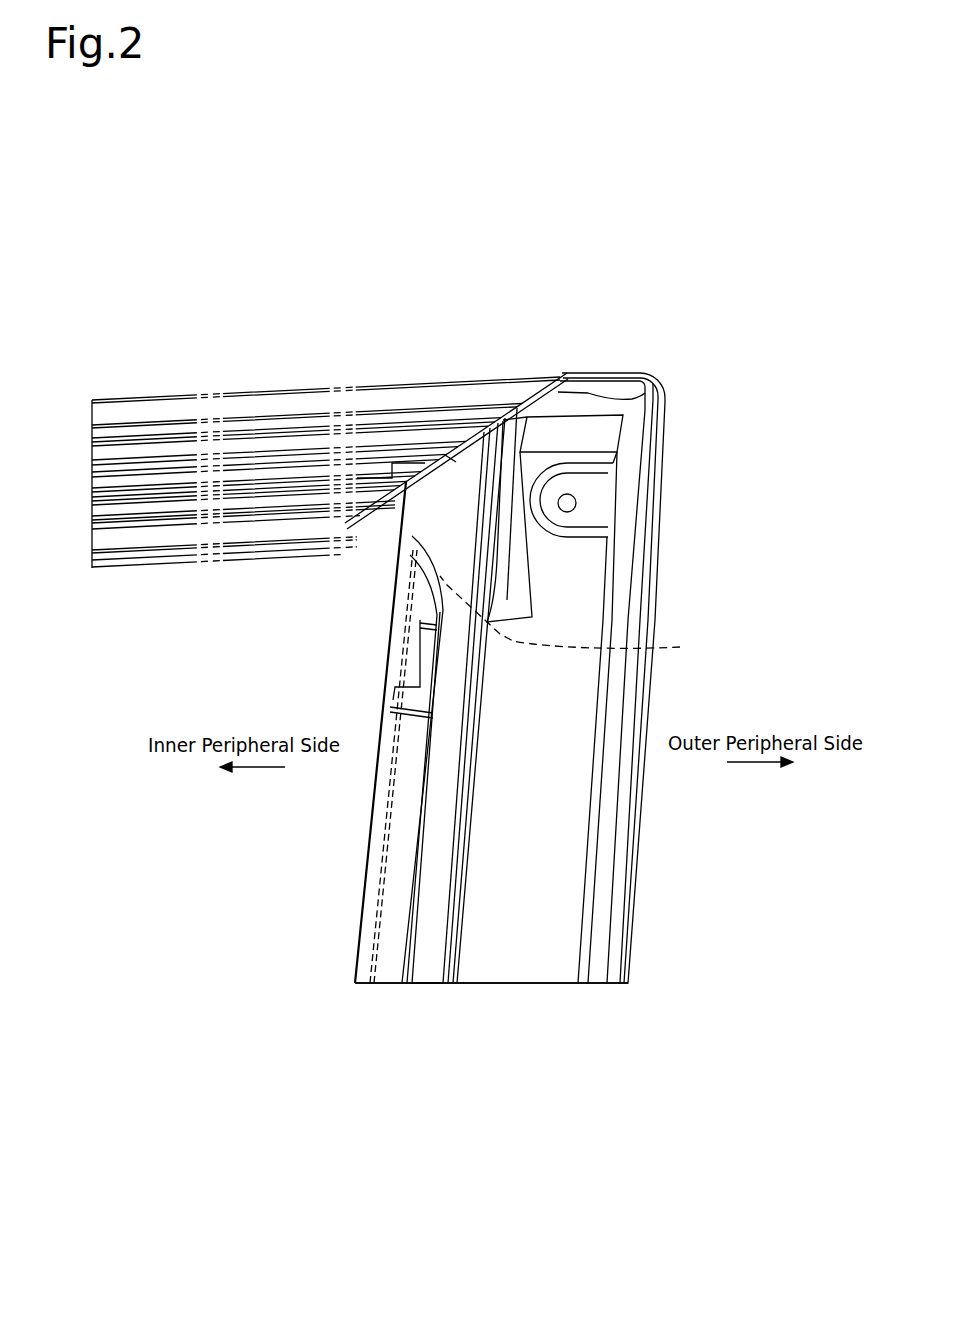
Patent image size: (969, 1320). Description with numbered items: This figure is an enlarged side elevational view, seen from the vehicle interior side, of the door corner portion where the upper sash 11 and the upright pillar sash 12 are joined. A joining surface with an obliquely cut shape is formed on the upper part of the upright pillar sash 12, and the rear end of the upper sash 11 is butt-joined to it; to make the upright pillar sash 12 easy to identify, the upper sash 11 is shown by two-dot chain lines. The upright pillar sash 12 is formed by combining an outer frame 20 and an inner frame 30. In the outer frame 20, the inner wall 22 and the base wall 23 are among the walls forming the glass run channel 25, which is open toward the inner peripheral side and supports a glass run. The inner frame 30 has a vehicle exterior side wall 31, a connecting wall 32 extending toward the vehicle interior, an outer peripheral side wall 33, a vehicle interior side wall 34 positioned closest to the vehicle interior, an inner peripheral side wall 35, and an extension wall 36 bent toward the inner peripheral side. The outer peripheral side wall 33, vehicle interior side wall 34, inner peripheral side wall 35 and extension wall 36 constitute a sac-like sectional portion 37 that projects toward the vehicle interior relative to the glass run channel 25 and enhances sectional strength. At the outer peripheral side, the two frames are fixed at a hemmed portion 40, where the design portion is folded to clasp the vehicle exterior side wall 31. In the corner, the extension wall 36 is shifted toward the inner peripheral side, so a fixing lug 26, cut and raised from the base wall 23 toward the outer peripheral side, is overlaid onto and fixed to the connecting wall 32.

The upper sash 11 is at (159, 380).
The upright pillar sash 12 is at (702, 488).
The outer frame 20 is at (518, 406).
The inner wall 22 is at (437, 468).
The base wall 23 is at (575, 616).
The glass run channel 25 is at (396, 501).
The fixing lug 26 is at (452, 490).
The inner frame 30 is at (556, 986).
The vehicle exterior side wall 31 is at (565, 715).
The connecting wall 32 is at (482, 523).
The outer peripheral side wall 33 is at (470, 750).
The vehicle interior side wall 34 is at (413, 603).
The inner peripheral side wall 35 is at (410, 931).
The extension wall 36 is at (408, 520).
The sac-like sectional portion 37 is at (428, 988).
The hemmed portion 40 is at (614, 392).